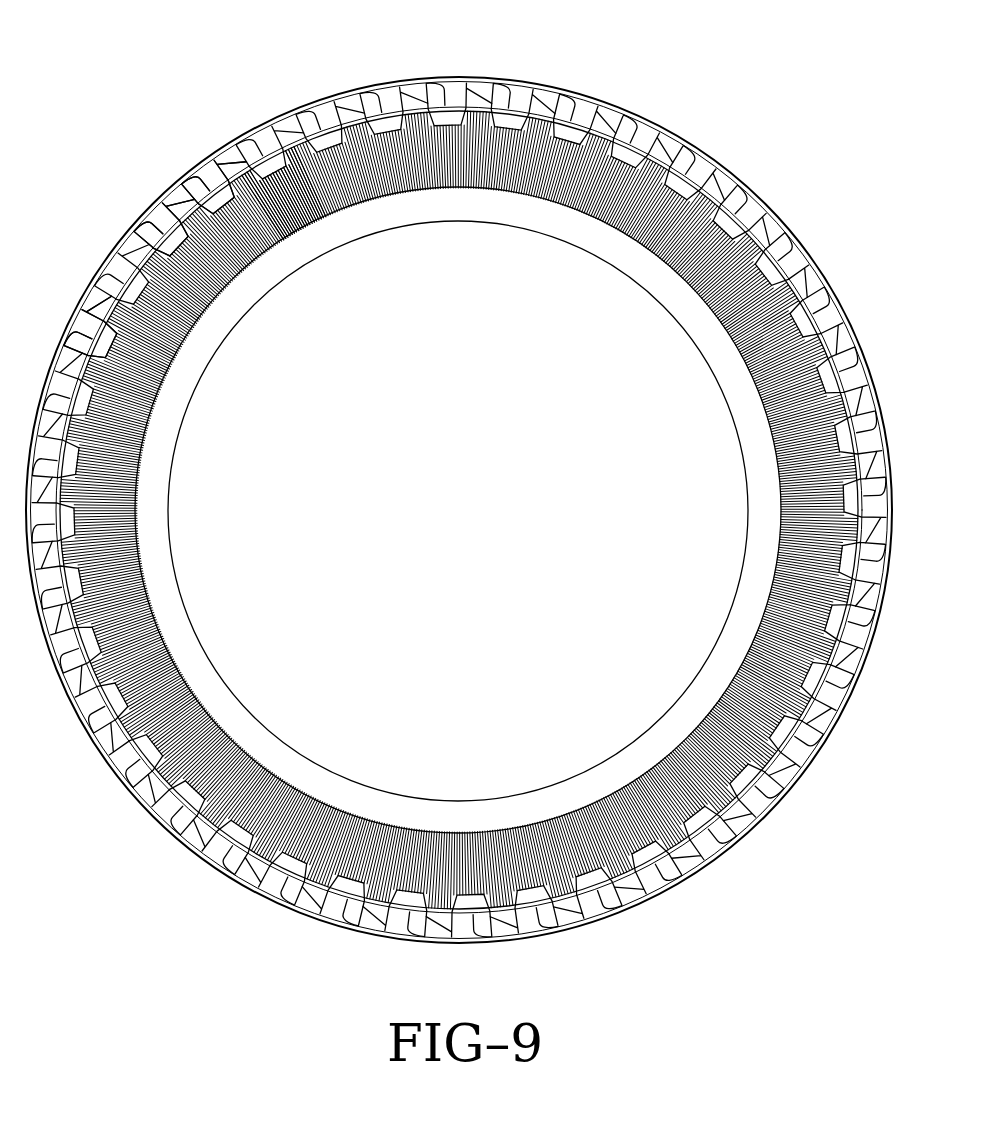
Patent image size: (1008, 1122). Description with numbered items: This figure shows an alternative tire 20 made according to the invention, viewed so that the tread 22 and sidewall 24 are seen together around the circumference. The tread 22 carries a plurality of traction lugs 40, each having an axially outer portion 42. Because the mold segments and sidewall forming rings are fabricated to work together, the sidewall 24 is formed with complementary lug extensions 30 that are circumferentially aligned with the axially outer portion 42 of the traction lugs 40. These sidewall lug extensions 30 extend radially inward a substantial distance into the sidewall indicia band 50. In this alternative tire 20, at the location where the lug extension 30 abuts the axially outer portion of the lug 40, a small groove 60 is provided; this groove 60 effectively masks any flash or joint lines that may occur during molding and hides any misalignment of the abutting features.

The tire 20 is at (625, 96).
The tread 22 is at (703, 163).
The sidewall 24 is at (615, 207).
The lug extension 30 is at (175, 253).
The traction lug 40 is at (205, 160).
The axially outer portion of the traction lug 42 is at (160, 215).
The sidewall indicia band 50 is at (300, 190).
The groove 60 is at (103, 347).